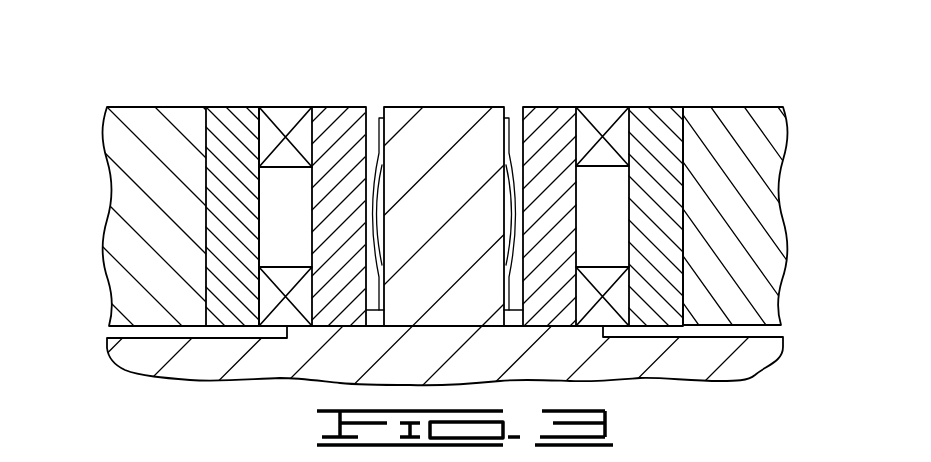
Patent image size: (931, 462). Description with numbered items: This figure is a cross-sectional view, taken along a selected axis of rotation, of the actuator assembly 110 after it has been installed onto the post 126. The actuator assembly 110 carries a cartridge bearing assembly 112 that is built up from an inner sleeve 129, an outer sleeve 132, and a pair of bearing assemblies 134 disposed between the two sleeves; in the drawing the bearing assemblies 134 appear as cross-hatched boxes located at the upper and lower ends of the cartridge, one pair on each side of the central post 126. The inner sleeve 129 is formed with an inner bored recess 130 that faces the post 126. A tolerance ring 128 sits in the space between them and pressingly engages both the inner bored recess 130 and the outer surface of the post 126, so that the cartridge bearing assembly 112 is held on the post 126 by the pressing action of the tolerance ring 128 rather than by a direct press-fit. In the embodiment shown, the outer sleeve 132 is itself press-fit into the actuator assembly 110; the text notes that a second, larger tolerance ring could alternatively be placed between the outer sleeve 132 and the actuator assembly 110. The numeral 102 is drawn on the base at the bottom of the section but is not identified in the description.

The substrate 102 is at (737, 350).
The actuator assembly 110 is at (132, 84).
The cartridge bearing assembly 112 is at (252, 75).
The post 126 is at (452, 120).
The tolerance ring 128 is at (380, 120).
The inner sleeve 129 is at (372, 157).
The inner bored recess 130 is at (522, 123).
The outer sleeve 132 is at (233, 108).
The bearing assemblies 134 is at (283, 115).